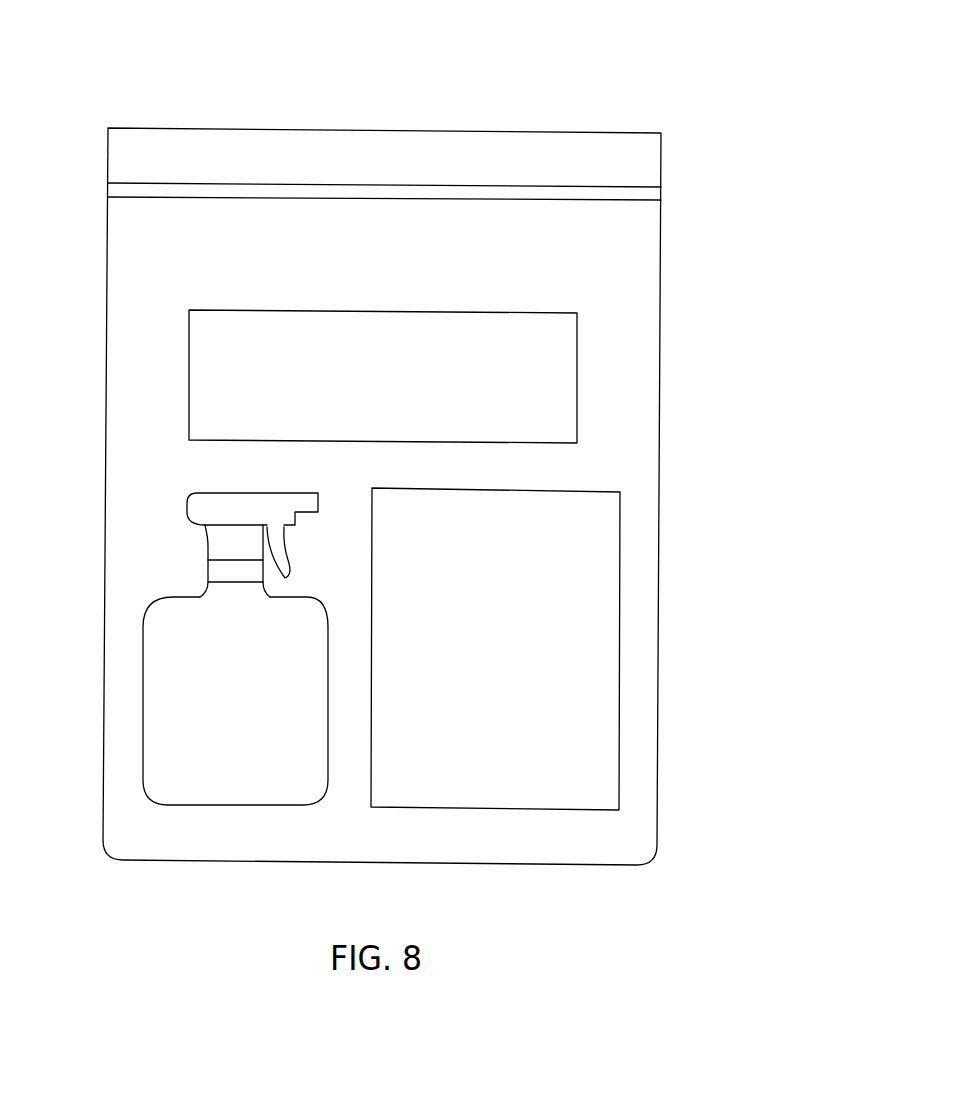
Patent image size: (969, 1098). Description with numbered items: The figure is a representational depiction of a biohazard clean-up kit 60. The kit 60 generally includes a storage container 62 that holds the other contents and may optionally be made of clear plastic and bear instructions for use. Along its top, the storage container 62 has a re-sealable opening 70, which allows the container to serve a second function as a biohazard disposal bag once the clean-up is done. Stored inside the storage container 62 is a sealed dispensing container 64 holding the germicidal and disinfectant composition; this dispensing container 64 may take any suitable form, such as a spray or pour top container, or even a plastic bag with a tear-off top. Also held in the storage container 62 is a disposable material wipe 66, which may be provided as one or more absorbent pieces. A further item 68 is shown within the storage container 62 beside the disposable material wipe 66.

The biohazard clean-up kit 60 is at (576, 88).
The storage container 62 is at (660, 303).
The dispensing container 64 is at (160, 694).
The disposable material wipe 66 is at (592, 598).
The instruction card 68 is at (558, 407).
The re-sealable opening 70 is at (335, 128).